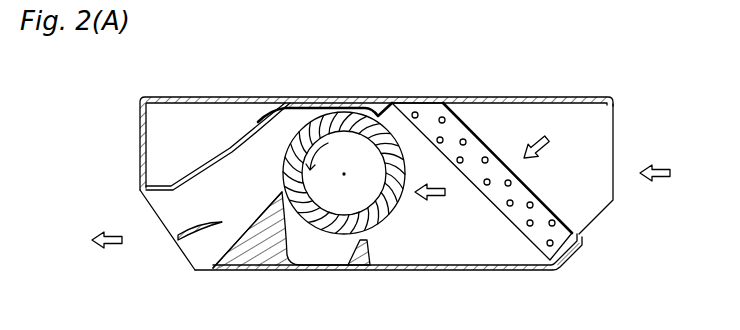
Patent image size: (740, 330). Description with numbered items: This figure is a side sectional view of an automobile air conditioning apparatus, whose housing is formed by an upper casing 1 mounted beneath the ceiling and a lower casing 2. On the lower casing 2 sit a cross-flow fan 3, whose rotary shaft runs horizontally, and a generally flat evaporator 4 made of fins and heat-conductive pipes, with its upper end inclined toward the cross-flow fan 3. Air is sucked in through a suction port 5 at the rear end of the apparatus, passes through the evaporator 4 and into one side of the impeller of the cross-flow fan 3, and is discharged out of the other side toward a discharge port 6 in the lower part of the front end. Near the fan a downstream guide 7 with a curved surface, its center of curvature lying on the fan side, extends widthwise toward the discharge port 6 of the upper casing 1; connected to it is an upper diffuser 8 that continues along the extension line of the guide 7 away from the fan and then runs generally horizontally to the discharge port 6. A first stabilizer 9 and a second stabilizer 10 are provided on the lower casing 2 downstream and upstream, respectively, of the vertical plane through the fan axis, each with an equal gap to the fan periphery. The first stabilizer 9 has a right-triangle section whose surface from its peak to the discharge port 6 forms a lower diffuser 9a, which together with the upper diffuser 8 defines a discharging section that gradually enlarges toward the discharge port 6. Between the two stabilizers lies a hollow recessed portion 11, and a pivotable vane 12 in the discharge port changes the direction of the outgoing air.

The upper casing 1 is at (240, 97).
The lower casing 2 is at (473, 271).
The cross-flow fan 3 is at (388, 219).
The evaporator 4 is at (483, 143).
The suction port 5 is at (613, 140).
The discharge port 6 is at (166, 226).
The downstream guide 7 is at (257, 118).
The upper diffuser 8 is at (196, 172).
The first stabilizer 9 is at (273, 247).
The lower diffuser 9a is at (235, 252).
The second stabilizer 10 is at (363, 268).
The recessed portion 11 is at (323, 268).
The vane 12 is at (198, 242).